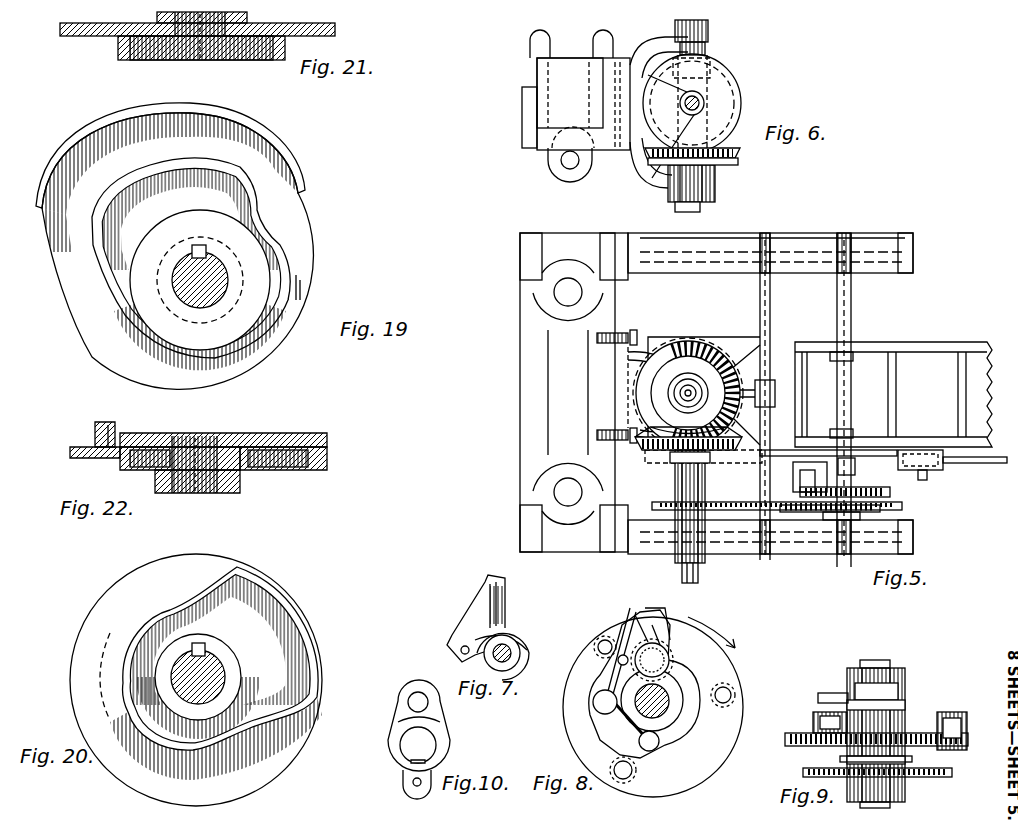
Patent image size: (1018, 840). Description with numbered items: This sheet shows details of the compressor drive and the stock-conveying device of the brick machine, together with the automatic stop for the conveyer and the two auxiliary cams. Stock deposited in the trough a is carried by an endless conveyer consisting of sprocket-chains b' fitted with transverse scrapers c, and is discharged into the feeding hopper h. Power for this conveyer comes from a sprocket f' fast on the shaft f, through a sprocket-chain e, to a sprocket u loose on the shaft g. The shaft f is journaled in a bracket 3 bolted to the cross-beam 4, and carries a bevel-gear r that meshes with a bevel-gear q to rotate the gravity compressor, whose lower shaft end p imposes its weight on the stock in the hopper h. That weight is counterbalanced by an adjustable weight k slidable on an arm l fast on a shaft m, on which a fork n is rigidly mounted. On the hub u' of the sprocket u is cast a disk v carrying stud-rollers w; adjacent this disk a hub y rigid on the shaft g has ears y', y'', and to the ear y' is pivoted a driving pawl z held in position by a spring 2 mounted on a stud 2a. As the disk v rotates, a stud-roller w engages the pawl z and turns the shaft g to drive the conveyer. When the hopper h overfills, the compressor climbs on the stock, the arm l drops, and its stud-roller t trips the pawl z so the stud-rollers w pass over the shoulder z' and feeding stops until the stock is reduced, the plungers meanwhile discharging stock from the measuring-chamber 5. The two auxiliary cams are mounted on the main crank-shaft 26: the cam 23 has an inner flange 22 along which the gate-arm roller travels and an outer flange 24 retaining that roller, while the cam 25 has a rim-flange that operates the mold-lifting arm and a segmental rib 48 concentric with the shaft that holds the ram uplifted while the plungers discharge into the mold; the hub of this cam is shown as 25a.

In FIG. 21, the inner flange 22 is at (118, 50).
In FIG. 19, the inner flange 22 is at (100, 247).
In FIG. 21, the cam 23 is at (197, 44).
In FIG. 19, the cam 23 is at (177, 251).
In FIG. 19, the outer flange 24 is at (70, 175).
In FIG. 19, the main crank-shaft 26 is at (185, 265).
In FIG. 20, the main crank-shaft 26 is at (226, 673).
In FIG. 22, the segmental rib 48 is at (95, 436).
In FIG. 20, the segmental rib 48 is at (110, 640).
In FIG. 22, the cam 25 is at (223, 443).
In FIG. 20, the cam 25 is at (196, 680).
In FIG. 22, the cam hub 25a is at (330, 462).
In FIG. 20, the cam hub 25a is at (173, 607).
In FIG. 6, the cross-beam 4 is at (576, 106).
In FIG. 5, the cross-beam 4 is at (578, 392).
In FIG. 6, the bracket 3 is at (662, 104).
In FIG. 5, the bracket 3 is at (688, 393).
In FIG. 5, the measuring-chamber 5 is at (770, 393).
In FIG. 6, the shaft f is at (693, 116).
In FIG. 5, the shaft f is at (690, 521).
In FIG. 5, the sprocket f' is at (635, 547).
In FIG. 6, the bevel-gear r is at (736, 90).
In FIG. 5, the bevel-gear r is at (724, 452).
In FIG. 6, the bevel-gear q is at (738, 162).
In FIG. 5, the bevel-gear q is at (660, 352).
In FIG. 6, the shaft p is at (676, 208).
In FIG. 5, the feeding hopper h is at (707, 396).
In FIG. 5, the fork n is at (758, 380).
In FIG. 5, the trough a is at (893, 394).
In FIG. 5, the sprocket-chains b' is at (862, 379).
In FIG. 5, the transverse scrapers c is at (892, 388).
In FIG. 5, the sprocket-chain e is at (736, 502).
In FIG. 5, the stud-roller t is at (855, 466).
In FIG. 5, the adjustable weight k is at (932, 472).
In FIG. 5, the arm l is at (985, 465).
In FIG. 5, the shaft m is at (793, 466).
In FIG. 5, the stud-rollers w is at (803, 493).
In FIG. 8, the stud-rollers w is at (600, 640).
In FIG. 9, the stud-rollers w is at (813, 720).
In FIG. 5, the shaft g is at (845, 567).
In FIG. 8, the shaft g is at (668, 696).
In FIG. 9, the shaft g is at (876, 724).
In FIG. 5, the sprocket u is at (846, 500).
In FIG. 8, the sprocket u is at (738, 678).
In FIG. 9, the sprocket u is at (877, 789).
In FIG. 5, the hub u' is at (878, 518).
In FIG. 9, the hub u' is at (886, 755).
In FIG. 5, the disk v is at (845, 483).
In FIG. 8, the disk v is at (653, 707).
In FIG. 9, the disk v is at (915, 733).
In FIG. 7, the driving pawl z is at (488, 627).
In FIG. 8, the driving pawl z is at (650, 635).
In FIG. 7, the shoulder z' is at (440, 625).
In FIG. 10, the hub y is at (424, 739).
In FIG. 8, the hub y is at (650, 684).
In FIG. 10, the ear y' is at (416, 687).
In FIG. 10, the ear y'' is at (394, 782).
In FIG. 8, the spring 2 is at (604, 688).
In FIG. 8, the stud 2a is at (602, 708).